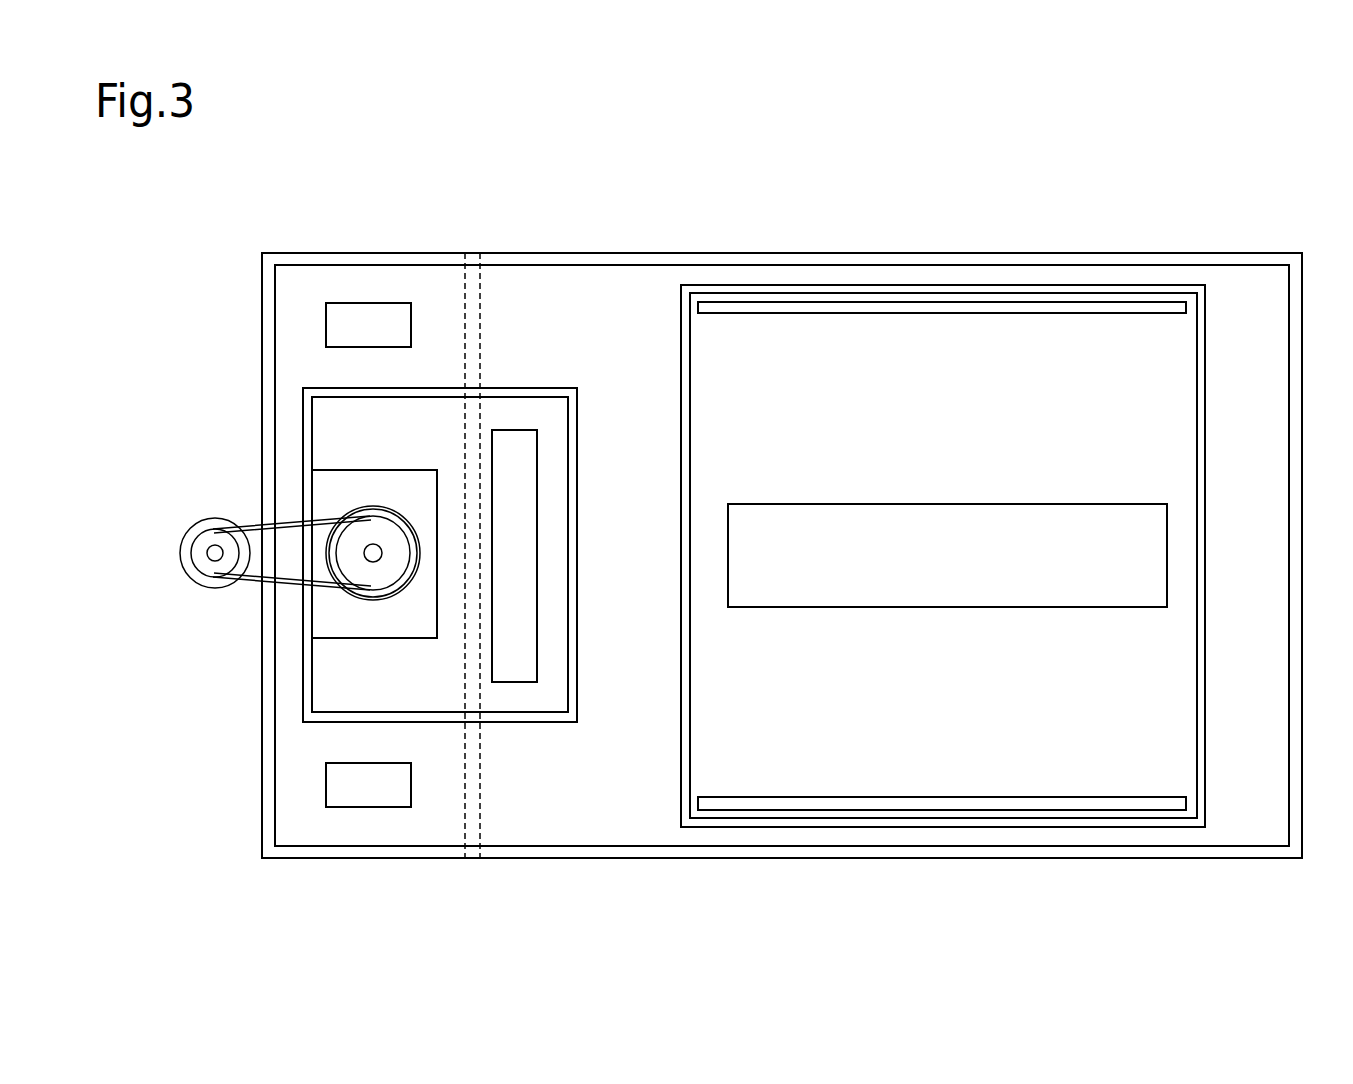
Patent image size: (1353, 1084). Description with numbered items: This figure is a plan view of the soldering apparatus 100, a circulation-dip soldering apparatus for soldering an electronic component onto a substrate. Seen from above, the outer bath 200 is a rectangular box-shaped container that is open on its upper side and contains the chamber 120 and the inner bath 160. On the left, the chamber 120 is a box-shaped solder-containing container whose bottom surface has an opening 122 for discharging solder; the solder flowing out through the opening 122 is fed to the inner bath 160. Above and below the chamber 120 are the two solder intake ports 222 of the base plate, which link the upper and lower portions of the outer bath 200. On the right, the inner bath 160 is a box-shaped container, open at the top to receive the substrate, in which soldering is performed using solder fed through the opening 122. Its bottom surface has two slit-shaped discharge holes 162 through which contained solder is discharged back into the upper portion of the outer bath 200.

The soldering apparatus 100 is at (1118, 150).
The outer bath 200 is at (1178, 254).
The solder intake ports 222 is at (355, 312).
The chamber 120 is at (525, 390).
The opening 122 is at (529, 552).
The inner bath 160 is at (1205, 410).
The discharge holes 162 is at (808, 318).